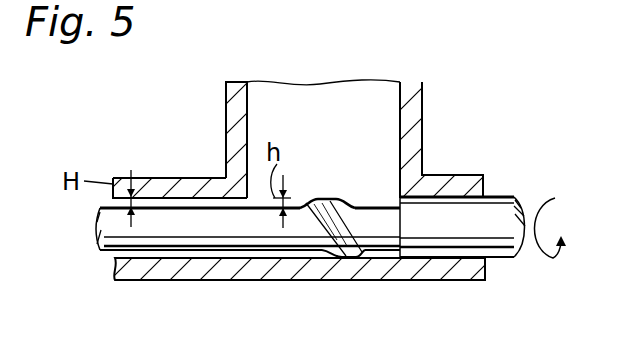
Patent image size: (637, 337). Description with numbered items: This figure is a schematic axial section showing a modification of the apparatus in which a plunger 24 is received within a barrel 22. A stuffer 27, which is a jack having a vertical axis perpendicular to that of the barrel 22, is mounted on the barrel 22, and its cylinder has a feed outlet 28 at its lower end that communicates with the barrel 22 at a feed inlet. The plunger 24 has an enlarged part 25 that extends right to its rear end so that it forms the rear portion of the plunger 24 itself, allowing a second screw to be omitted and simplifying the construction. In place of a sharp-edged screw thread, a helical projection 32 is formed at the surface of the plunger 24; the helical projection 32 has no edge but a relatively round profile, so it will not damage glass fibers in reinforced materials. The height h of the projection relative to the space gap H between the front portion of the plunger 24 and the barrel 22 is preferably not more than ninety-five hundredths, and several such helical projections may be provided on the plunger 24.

The barrel 22 is at (162, 178).
The plunger 24 is at (216, 228).
The enlarged part 25 is at (457, 238).
The stuffer 27 is at (233, 101).
The feed outlet 28 is at (365, 188).
The helical projection 32 is at (340, 258).